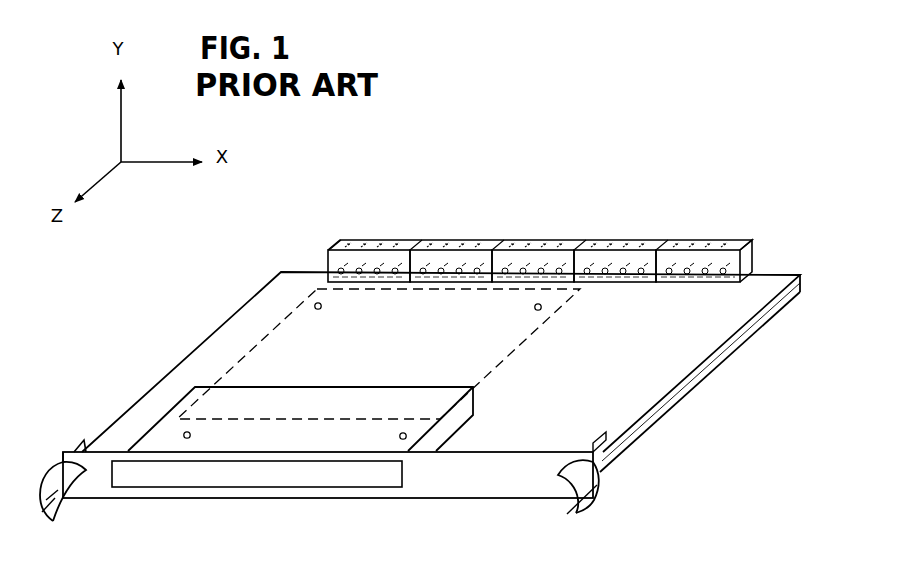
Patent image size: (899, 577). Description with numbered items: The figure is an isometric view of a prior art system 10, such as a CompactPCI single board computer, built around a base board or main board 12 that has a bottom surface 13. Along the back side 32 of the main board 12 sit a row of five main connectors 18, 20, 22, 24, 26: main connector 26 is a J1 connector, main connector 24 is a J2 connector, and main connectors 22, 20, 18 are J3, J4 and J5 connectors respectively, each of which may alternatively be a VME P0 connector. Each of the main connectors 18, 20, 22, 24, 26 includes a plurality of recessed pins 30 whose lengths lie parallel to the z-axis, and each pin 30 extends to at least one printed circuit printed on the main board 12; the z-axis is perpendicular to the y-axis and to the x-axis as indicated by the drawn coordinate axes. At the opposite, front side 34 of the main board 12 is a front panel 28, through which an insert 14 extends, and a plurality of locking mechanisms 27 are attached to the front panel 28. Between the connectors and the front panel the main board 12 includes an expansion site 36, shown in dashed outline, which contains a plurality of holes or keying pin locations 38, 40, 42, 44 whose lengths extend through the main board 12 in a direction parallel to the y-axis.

The system 10 is at (502, 138).
The main board 12 is at (648, 399).
The bottom surface 13 is at (620, 450).
The insert 14 is at (193, 478).
The main connector 18 is at (340, 249).
The main connector 20 is at (436, 248).
The main connector 22 is at (521, 248).
The main connector 24 is at (598, 248).
The main connector 26 is at (749, 243).
The locking mechanism 27 is at (52, 495).
The front panel 28 is at (440, 483).
The recessed pin 30 is at (363, 241).
The back side 32 is at (744, 357).
The front side 34 is at (56, 452).
The expansion site 36 is at (501, 358).
The keying pin location 38 is at (321, 309).
The keying pin location 40 is at (534, 309).
The keying pin location 42 is at (400, 430).
The keying pin location 44 is at (181, 430).